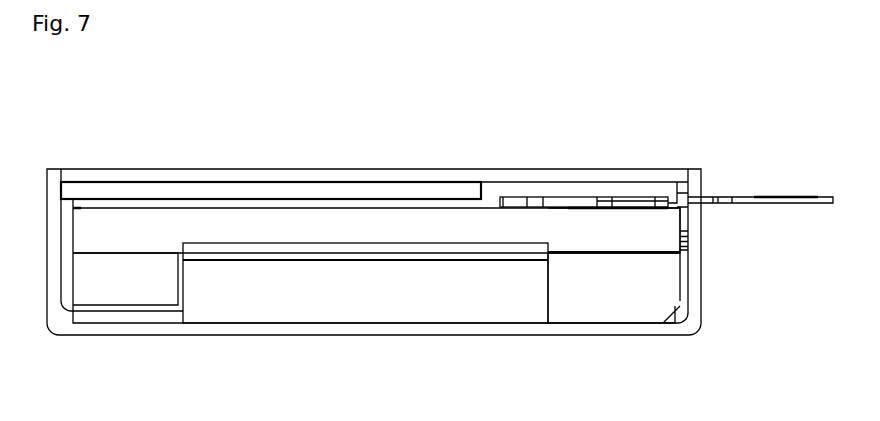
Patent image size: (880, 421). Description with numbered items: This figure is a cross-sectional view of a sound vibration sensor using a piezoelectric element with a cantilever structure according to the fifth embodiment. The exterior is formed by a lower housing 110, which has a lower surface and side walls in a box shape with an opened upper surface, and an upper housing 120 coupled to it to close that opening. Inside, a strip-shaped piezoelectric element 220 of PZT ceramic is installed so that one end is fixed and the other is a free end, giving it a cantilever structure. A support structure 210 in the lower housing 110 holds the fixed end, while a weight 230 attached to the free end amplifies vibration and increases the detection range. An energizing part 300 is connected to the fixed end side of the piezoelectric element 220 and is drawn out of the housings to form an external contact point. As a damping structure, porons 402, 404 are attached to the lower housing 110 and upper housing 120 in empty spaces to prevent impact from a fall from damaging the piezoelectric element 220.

The lower housing 110 is at (468, 330).
The upper housing 120 is at (551, 175).
The support structure 210 is at (593, 307).
The piezoelectric element 220 is at (667, 228).
The weight 230 is at (124, 293).
The energizing part 300 is at (765, 197).
The poron 402 is at (299, 307).
The poron 404 is at (255, 185).